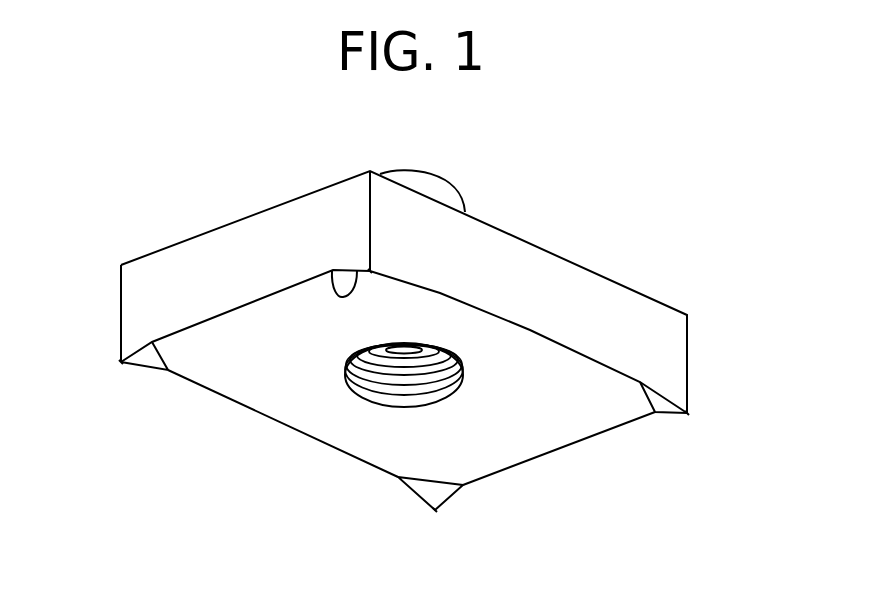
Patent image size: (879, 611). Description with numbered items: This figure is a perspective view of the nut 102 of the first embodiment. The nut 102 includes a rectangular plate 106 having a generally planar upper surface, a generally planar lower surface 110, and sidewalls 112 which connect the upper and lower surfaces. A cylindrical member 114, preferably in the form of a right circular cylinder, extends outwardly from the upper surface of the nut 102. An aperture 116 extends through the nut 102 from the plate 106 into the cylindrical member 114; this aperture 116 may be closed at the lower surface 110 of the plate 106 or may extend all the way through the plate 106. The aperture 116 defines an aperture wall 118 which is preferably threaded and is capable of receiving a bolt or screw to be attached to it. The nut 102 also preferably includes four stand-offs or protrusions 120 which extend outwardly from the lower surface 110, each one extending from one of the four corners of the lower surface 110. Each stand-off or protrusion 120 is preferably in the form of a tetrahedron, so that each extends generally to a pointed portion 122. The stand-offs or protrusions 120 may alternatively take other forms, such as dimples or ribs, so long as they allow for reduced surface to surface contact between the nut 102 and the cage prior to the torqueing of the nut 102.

The nut 102 is at (568, 218).
The rectangular plate 106 is at (667, 343).
The lower surface 110 is at (260, 363).
The sidewalls 112 is at (215, 260).
The cylindrical member 114 is at (432, 188).
The aperture 116 is at (400, 355).
The aperture wall 118 is at (368, 387).
The stand-offs or protrusions 120 is at (333, 268).
The pointed portion 122 is at (372, 274).